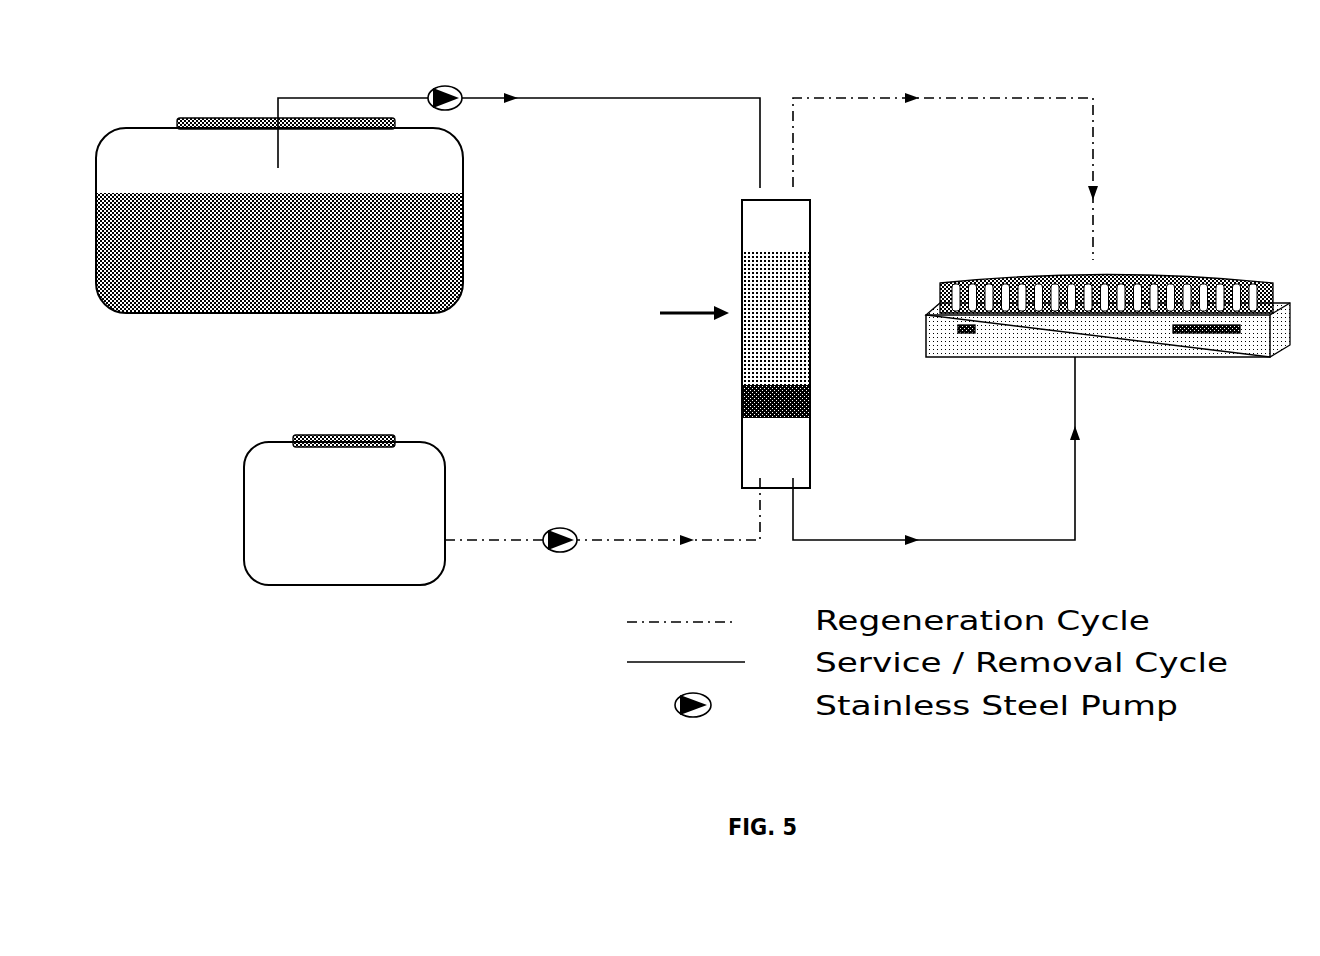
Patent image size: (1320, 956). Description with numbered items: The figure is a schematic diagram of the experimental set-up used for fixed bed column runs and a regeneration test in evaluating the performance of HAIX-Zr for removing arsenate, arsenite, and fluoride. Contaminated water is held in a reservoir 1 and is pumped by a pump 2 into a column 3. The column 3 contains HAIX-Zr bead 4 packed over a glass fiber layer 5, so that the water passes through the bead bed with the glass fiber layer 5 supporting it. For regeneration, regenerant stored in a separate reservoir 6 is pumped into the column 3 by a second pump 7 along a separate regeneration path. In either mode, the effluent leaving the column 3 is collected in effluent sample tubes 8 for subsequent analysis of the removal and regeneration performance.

The reservoir 1 is at (279, 205).
The pump 2 is at (445, 70).
The column 3 is at (709, 344).
The HAIX-Zr bead 4 is at (776, 317).
The glass fiber layer 5 is at (797, 402).
The reservoir 6 is at (347, 510).
The pump 7 is at (560, 560).
The effluent sample tubes 8 is at (1108, 326).